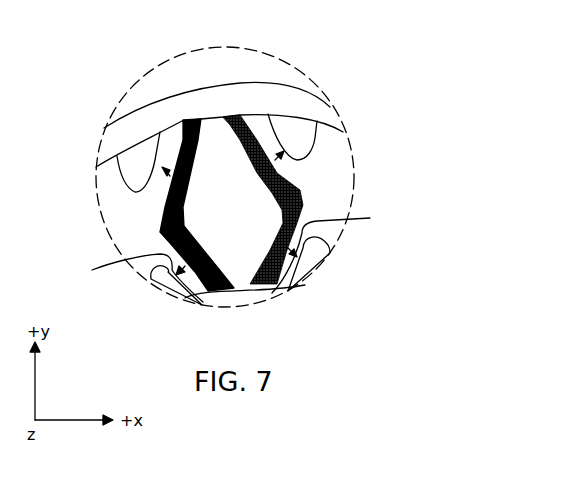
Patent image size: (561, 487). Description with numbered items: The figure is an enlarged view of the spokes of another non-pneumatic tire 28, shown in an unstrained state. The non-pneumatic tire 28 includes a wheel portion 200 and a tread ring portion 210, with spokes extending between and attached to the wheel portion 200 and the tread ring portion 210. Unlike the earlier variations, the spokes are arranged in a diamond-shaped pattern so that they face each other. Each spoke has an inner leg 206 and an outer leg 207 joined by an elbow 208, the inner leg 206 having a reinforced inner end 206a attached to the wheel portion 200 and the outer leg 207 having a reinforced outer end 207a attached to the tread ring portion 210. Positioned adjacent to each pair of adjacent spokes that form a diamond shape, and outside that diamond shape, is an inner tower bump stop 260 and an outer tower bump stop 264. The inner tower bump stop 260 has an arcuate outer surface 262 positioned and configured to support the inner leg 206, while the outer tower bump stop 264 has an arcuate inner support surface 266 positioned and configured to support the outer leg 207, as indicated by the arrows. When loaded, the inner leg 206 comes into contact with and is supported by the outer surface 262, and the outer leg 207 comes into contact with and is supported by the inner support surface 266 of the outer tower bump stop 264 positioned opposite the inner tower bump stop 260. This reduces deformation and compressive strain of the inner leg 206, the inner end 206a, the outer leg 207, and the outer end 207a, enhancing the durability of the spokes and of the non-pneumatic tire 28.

The non-pneumatic tire 28 is at (286, 54).
The wheel portion 200 is at (216, 294).
The inner leg 206 is at (271, 257).
The inner end 206a is at (222, 292).
The outer leg 207 is at (191, 158).
The outer end 207a is at (228, 117).
The elbow 208 is at (160, 230).
The tread ring portion 210 is at (333, 103).
The inner tower bump stop 260 is at (171, 289).
The outer surface 262 is at (231, 255).
The outer tower bump stop 264 is at (125, 168).
The inner support surface 266 is at (153, 173).